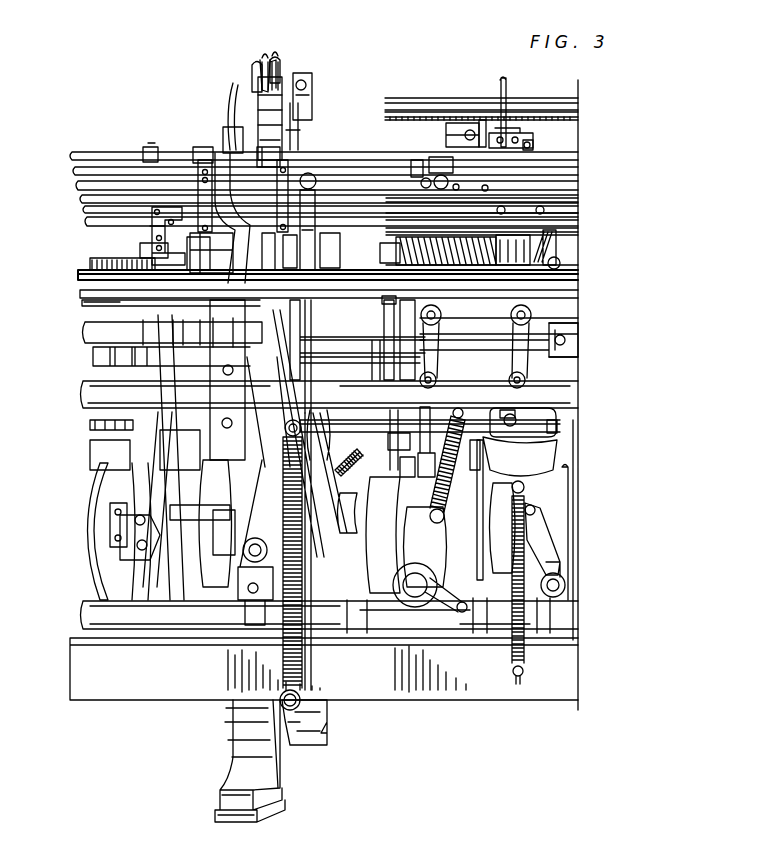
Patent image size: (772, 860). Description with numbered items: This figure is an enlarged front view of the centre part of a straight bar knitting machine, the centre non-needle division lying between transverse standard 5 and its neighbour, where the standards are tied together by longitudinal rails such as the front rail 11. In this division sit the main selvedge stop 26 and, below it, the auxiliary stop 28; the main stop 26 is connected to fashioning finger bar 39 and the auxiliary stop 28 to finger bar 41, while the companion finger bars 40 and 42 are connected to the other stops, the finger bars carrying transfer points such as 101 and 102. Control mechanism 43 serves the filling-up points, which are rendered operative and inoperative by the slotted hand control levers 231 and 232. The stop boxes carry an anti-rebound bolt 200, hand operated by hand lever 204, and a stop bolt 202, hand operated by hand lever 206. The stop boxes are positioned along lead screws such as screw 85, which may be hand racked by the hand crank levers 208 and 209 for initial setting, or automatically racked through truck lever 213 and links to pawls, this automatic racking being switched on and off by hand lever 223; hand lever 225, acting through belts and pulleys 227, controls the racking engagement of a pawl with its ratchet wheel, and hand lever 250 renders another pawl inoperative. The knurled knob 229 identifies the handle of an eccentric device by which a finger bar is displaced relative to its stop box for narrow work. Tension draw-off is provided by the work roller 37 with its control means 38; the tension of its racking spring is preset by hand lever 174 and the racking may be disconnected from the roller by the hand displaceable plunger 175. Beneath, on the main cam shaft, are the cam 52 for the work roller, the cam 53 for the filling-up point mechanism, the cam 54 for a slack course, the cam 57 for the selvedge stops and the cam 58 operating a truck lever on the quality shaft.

The transverse standard 5 is at (270, 720).
The front rail 11 is at (446, 690).
The main selvedge stop 26 is at (527, 148).
The auxiliary stop 28 is at (433, 247).
The work roller 37 is at (85, 301).
The control means 38 is at (82, 293).
The fashioning finger bar 39 is at (85, 185).
The fashioning finger bar 40 is at (92, 198).
The fashioning finger bar 41 is at (95, 209).
The fashioning finger bar 42 is at (97, 221).
The control mechanism for filling-up points 43 is at (274, 66).
The cam for the work roller 52 is at (232, 568).
The cam for filling-up point mechanism 53 is at (323, 600).
The cam for slack course 54 is at (383, 608).
The cam for selvedge stops 57 is at (519, 676).
The cam 58 is at (572, 545).
The lead screw 85 is at (390, 304).
The transfer point 101 is at (153, 230).
The transfer point 102 is at (153, 240).
The hand lever 174 is at (312, 175).
The hand displaceable plunger 175 is at (250, 226).
The anti-rebound bolt 200 is at (520, 143).
The stop bolt 202 is at (447, 118).
The hand lever 204 is at (506, 95).
The hand lever 206 is at (478, 130).
The hand crank lever 208 is at (434, 383).
The hand crank lever 209 is at (522, 383).
The truck lever 213 is at (578, 640).
The hand lever 223 is at (500, 408).
The hand lever 225 is at (312, 82).
The belts and pulleys 227 is at (229, 120).
The knurled knob 229 is at (442, 178).
The hand control lever 231 is at (256, 68).
The hand control lever 232 is at (280, 62).
The hand lever 250 is at (510, 267).